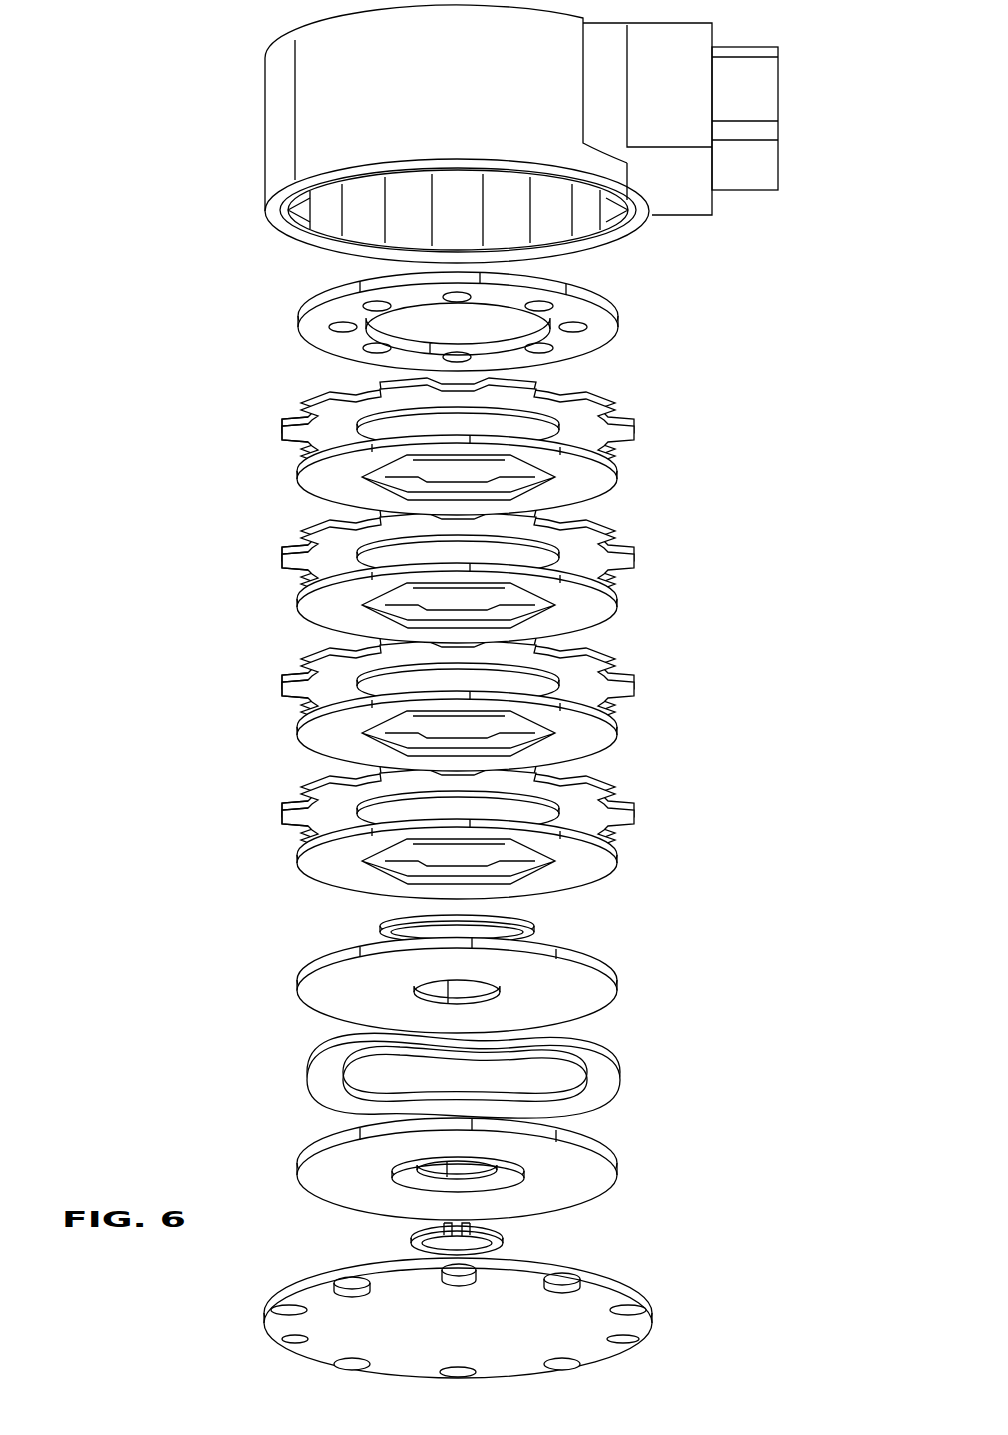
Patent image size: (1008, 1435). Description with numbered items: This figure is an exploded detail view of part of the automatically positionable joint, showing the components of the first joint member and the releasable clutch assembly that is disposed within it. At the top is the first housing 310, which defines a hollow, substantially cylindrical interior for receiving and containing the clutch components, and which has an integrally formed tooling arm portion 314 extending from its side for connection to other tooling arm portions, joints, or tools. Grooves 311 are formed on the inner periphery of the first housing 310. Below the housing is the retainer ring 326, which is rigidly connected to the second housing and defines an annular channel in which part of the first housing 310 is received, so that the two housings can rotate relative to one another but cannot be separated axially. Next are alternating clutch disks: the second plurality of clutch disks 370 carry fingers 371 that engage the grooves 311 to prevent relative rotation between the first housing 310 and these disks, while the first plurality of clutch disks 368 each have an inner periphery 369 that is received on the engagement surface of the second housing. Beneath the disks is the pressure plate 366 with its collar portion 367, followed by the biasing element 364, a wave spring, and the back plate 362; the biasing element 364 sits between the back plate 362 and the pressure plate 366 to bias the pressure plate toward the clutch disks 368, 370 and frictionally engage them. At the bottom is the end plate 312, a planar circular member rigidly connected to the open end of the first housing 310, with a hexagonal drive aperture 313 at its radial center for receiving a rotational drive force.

The first housing 310 is at (262, 123).
The grooves 311 is at (330, 233).
The tooling arm portion 314 is at (766, 104).
The retainer ring 326 is at (613, 303).
The second plurality of clutch disks 370 is at (632, 430).
The fingers 371 is at (283, 443).
The first plurality of clutch disks 368 is at (618, 479).
The inner periphery 369 is at (297, 482).
The collar portion 367 is at (533, 932).
The pressure plate 366 is at (615, 985).
The biasing element 364 is at (603, 1075).
The back plate 362 is at (617, 1172).
The drive aperture 313 is at (424, 1328).
The end plate 312 is at (620, 1292).